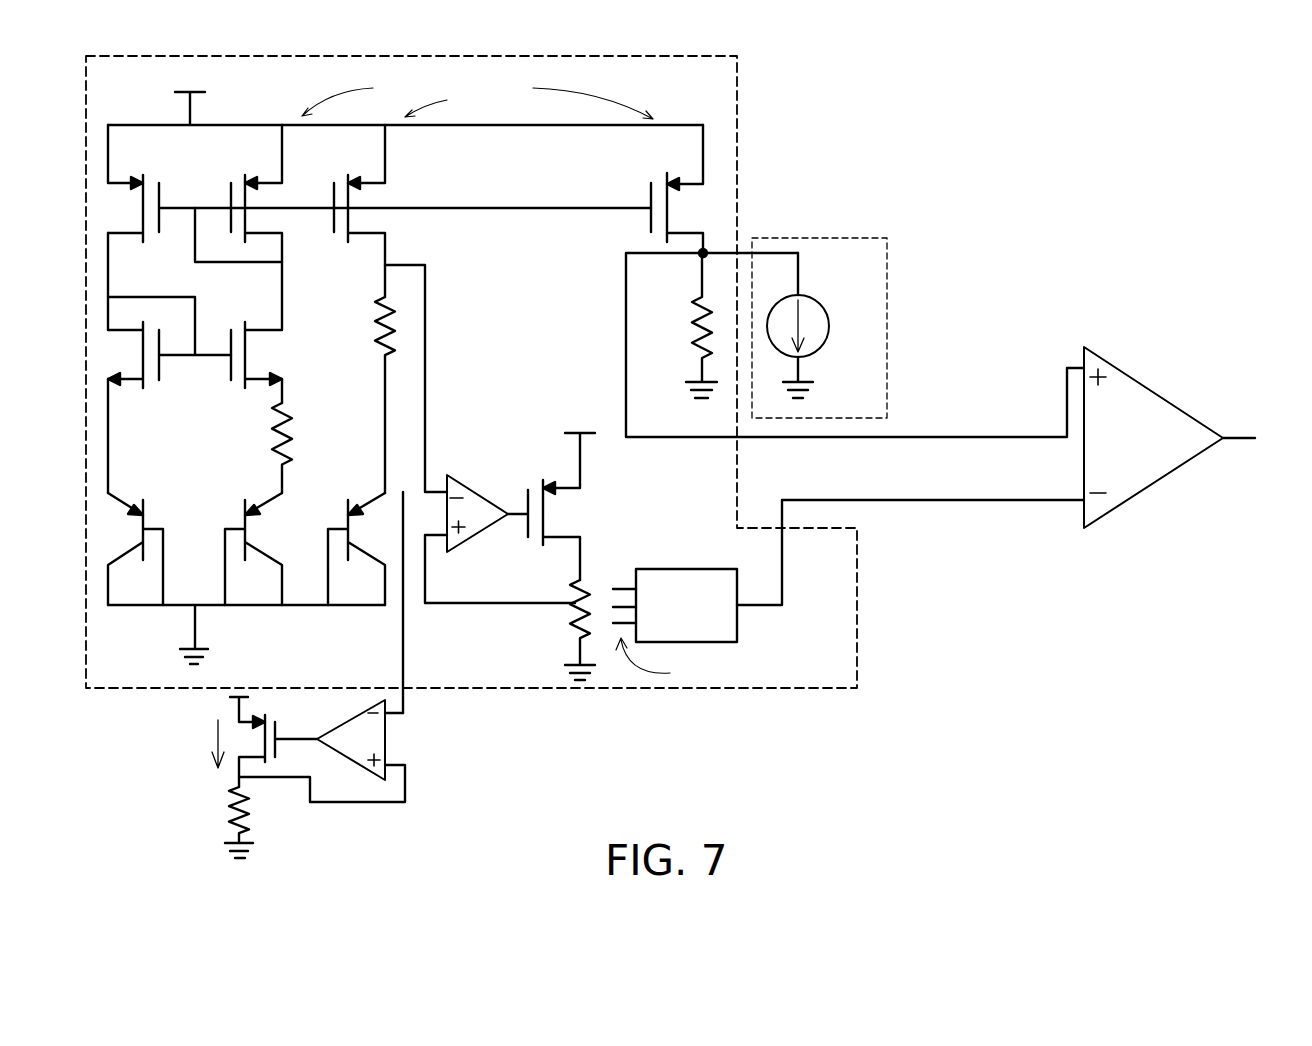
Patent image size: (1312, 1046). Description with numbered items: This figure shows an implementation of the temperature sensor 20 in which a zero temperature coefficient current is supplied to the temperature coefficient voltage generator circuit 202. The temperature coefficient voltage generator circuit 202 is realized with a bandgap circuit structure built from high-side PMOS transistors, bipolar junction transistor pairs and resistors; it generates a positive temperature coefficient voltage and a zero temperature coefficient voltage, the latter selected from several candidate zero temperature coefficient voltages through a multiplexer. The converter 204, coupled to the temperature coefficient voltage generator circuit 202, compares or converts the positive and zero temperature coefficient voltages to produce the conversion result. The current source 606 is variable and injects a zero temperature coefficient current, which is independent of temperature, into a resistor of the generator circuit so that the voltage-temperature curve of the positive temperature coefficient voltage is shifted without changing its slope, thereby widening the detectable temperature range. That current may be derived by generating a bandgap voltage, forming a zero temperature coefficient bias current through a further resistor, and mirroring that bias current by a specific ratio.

The temperature sensor 20 is at (1082, 158).
The temperature coefficient voltage generator circuit 202 is at (857, 623).
The converter 204 is at (1157, 485).
The current source 606 is at (887, 320).